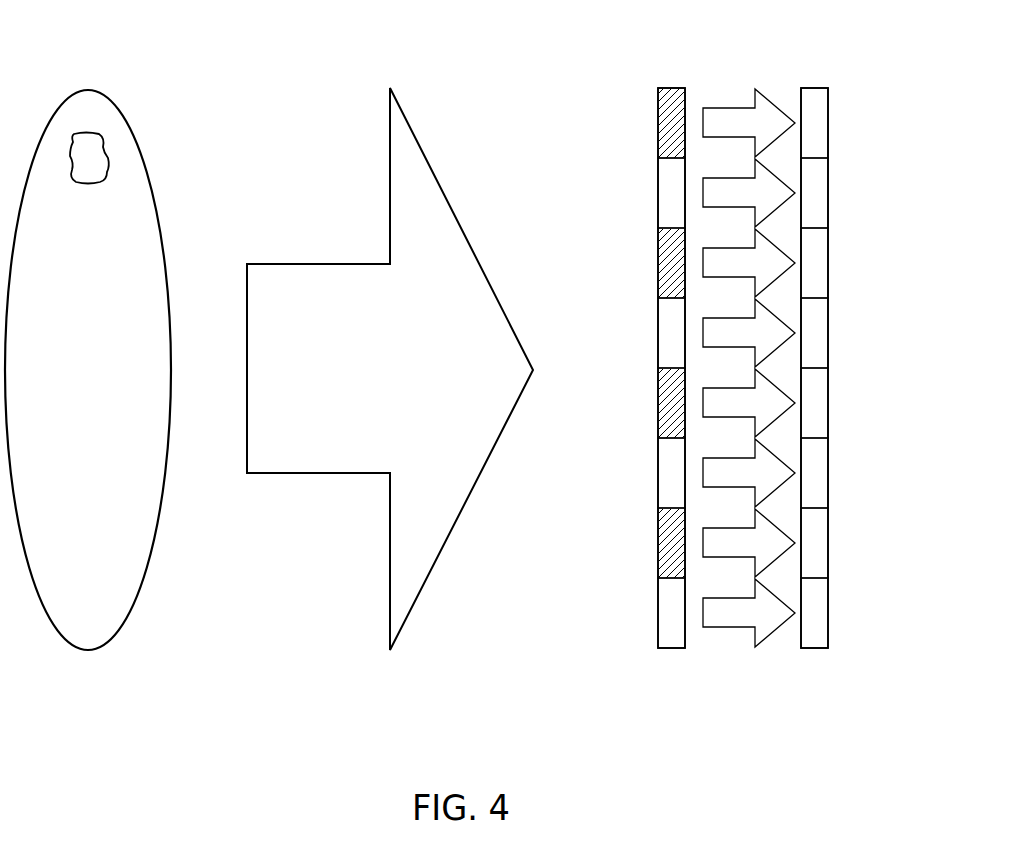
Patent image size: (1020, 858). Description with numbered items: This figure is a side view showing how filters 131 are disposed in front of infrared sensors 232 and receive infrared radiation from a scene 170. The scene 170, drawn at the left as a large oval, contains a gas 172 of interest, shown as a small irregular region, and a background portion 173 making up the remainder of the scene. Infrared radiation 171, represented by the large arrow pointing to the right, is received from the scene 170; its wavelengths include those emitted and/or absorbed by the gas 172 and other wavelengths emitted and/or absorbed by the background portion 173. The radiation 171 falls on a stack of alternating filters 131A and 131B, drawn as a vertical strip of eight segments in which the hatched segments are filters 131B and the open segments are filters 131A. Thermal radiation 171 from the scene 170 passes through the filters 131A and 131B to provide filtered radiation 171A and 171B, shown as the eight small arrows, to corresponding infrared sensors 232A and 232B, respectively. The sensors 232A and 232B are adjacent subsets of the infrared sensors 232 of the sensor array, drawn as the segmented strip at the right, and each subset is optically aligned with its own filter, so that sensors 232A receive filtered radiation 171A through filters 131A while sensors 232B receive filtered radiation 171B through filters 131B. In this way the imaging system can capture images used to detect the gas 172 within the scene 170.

The scene 170 is at (99, 380).
The infrared radiation 171 is at (412, 380).
The gas 172 is at (107, 142).
The background portion 173 is at (97, 249).
The filters 131 is at (692, 73).
The filter 131A is at (658, 170).
The filter 131B is at (658, 100).
The filtered radiation 171A is at (768, 203).
The filtered radiation 171B is at (768, 133).
The infrared sensors 232 is at (835, 73).
The infrared sensors 232A is at (828, 170).
The infrared sensors 232B is at (828, 100).